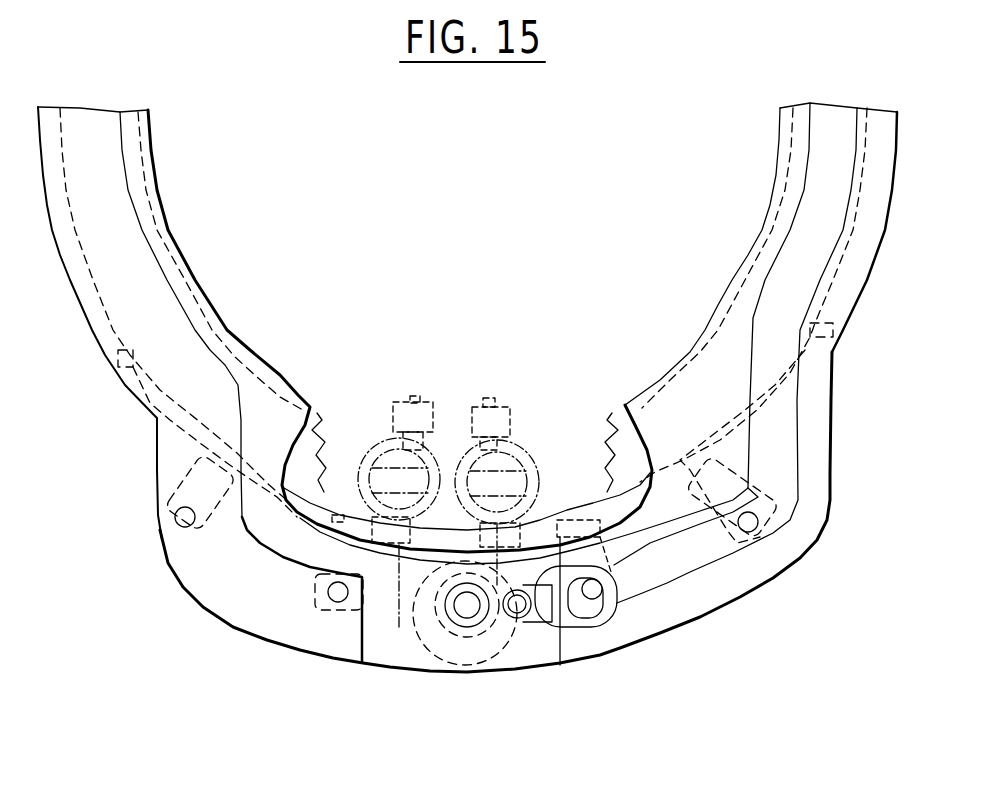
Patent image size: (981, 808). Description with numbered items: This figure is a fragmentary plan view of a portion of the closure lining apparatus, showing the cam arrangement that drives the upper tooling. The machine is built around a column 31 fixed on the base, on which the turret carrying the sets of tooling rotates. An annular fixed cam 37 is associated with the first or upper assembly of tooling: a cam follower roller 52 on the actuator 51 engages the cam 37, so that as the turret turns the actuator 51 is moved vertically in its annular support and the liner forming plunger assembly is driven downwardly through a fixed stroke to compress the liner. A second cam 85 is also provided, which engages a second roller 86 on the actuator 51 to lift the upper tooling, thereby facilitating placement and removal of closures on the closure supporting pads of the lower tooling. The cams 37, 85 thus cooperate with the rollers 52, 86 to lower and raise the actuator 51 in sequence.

The column 31 is at (843, 342).
The annular fixed cam 37 is at (317, 417).
The actuator 51 is at (468, 458).
The cam follower roller 52 is at (372, 478).
The second cam 85 is at (618, 506).
The second roller 86 is at (472, 569).